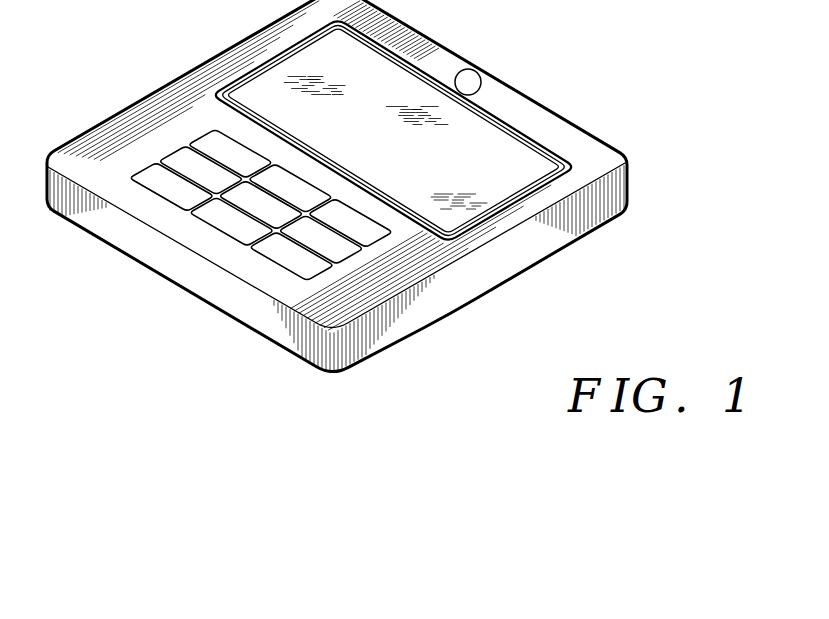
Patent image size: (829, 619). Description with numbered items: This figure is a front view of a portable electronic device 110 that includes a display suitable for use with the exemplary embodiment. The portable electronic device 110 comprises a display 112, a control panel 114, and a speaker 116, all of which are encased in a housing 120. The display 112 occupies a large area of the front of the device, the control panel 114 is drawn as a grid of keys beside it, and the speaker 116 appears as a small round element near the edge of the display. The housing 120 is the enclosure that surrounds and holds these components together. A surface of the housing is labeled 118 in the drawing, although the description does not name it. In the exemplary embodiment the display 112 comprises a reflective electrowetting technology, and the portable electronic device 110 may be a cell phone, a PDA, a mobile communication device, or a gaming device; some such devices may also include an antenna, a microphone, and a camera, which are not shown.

The portable electronic device 110 is at (654, 340).
The display 112 is at (297, 63).
The control panel 114 is at (182, 163).
The speaker 116 is at (470, 82).
The housing top surface 118 is at (570, 140).
The housing 120 is at (492, 270).